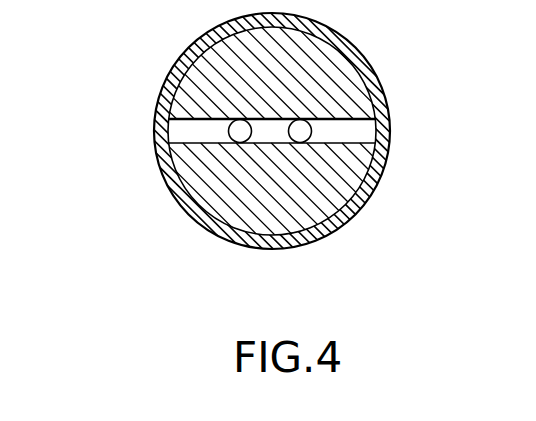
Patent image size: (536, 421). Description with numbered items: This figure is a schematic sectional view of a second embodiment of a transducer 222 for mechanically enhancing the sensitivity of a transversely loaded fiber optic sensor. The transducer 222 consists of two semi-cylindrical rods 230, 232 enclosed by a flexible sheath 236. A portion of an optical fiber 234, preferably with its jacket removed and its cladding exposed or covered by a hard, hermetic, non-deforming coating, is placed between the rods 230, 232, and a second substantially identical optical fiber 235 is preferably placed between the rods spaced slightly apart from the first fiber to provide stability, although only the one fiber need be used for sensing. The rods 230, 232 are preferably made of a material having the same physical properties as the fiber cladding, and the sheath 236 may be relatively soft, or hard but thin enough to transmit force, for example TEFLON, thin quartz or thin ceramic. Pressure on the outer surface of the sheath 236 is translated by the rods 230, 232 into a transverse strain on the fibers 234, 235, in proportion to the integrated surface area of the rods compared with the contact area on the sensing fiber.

The transducer 222 is at (150, 272).
The semi-cylindrical rod 230 is at (323, 75).
The semi-cylindrical rod 232 is at (333, 192).
The optical fiber 234 is at (229, 134).
The second optical fiber 235 is at (311, 134).
The flexible sheath 236 is at (170, 195).